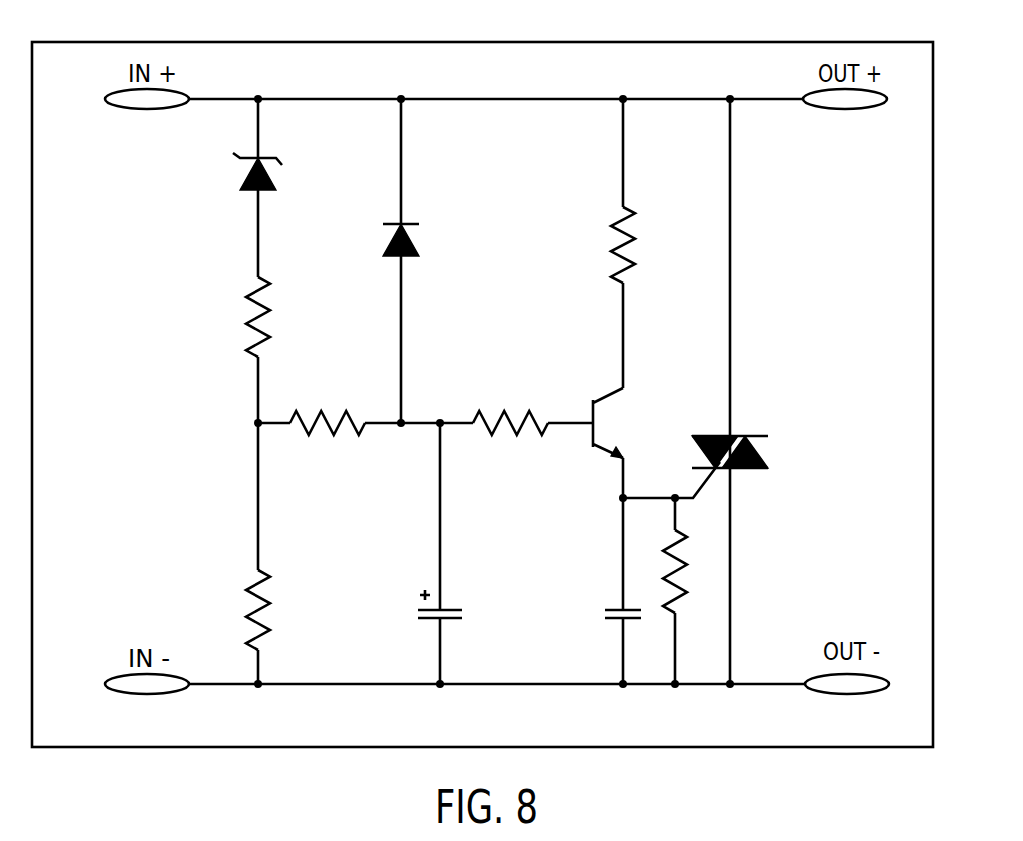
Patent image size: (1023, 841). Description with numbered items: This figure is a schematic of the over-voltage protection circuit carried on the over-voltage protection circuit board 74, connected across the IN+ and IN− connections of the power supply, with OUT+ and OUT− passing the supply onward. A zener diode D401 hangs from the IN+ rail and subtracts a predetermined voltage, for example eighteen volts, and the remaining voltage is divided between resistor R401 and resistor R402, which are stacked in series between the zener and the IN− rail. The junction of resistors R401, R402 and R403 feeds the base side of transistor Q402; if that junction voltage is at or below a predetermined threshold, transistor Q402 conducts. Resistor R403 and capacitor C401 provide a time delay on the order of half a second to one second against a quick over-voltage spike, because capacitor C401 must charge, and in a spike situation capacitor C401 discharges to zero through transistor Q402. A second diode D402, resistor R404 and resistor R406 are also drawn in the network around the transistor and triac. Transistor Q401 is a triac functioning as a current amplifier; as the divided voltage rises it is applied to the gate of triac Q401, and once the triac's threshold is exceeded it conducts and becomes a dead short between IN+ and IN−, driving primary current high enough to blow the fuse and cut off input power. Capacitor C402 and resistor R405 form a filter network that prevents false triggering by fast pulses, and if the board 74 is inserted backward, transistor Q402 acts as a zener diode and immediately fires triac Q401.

The over-voltage protection circuit board 74 is at (907, 300).
The zener diode D401 is at (304, 180).
The diode 1N4148 D402 is at (440, 244).
The resistor R401 is at (154, 317).
The resistor R402 is at (152, 610).
The resistor R403 is at (348, 455).
The resistor 10K R404 is at (516, 455).
The resistor R405 is at (607, 238).
The resistor 470 ohm R406 is at (683, 587).
The capacitor C401 is at (397, 625).
The capacitor C402 is at (589, 633).
The triac Q401 is at (776, 451).
The transistor Q402 is at (578, 400).